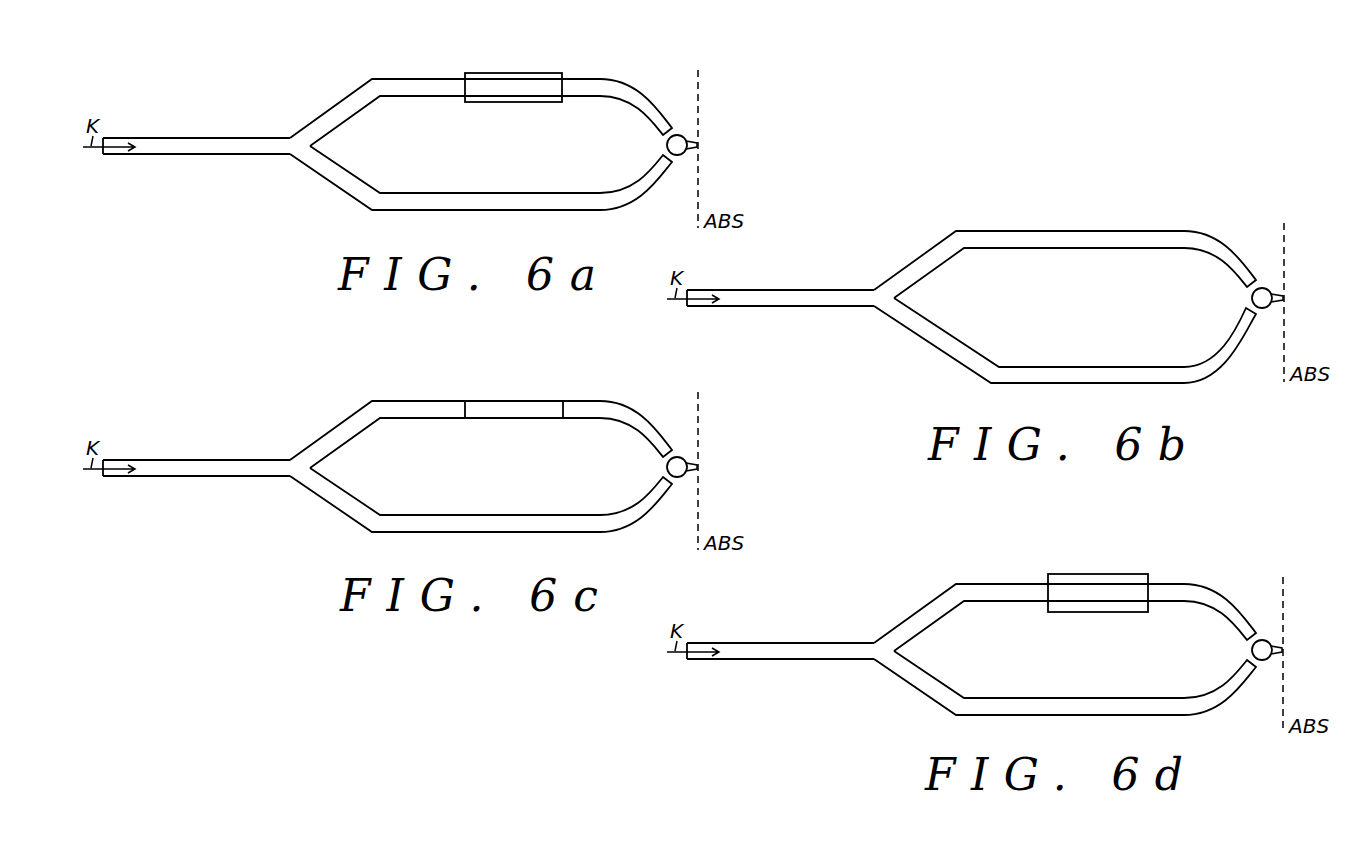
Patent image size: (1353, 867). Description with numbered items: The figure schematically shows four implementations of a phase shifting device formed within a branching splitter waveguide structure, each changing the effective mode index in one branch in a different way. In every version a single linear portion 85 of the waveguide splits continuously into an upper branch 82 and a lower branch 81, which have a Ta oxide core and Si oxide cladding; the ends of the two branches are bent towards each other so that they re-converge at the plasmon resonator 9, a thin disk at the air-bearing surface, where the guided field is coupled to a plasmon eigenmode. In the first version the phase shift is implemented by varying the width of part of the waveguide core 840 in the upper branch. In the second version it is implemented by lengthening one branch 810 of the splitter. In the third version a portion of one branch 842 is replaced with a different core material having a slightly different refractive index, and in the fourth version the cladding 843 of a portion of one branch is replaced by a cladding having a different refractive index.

In FIG. 6a, the linear portion of the waveguide 85 is at (181, 154).
In FIG. 6b, the linear portion of the waveguide 85 is at (780, 316).
In FIG. 6c, the linear portion of the waveguide 85 is at (196, 486).
In FIG. 6d, the linear portion of the waveguide 85 is at (780, 669).
In FIG. 6a, the upper branch 82 is at (331, 115).
In FIG. 6b, the upper branch 82 is at (1065, 261).
In FIG. 6c, the upper branch 82 is at (481, 431).
In FIG. 6d, the upper branch 82 is at (1065, 614).
In FIG. 6a, the lower branch 81 is at (365, 196).
In FIG. 6c, the lower branch 81 is at (481, 506).
In FIG. 6d, the lower branch 81 is at (1065, 689).
In FIG. 6b, the lengthened branch 810 is at (1065, 341).
In FIG. 6a, the varied-width core portion 840 is at (513, 83).
In FIG. 6b, the varied-width core portion 840 is at (1104, 216).
In FIG. 6c, the replaced core portion 842 is at (514, 386).
In FIG. 6d, the replaced cladding 843 is at (1098, 573).
In FIG. 6a, the plasmon resonator 9 is at (681, 133).
In FIG. 6b, the plasmon resonator 9 is at (1267, 278).
In FIG. 6c, the plasmon resonator 9 is at (682, 447).
In FIG. 6d, the plasmon resonator 9 is at (1267, 630).